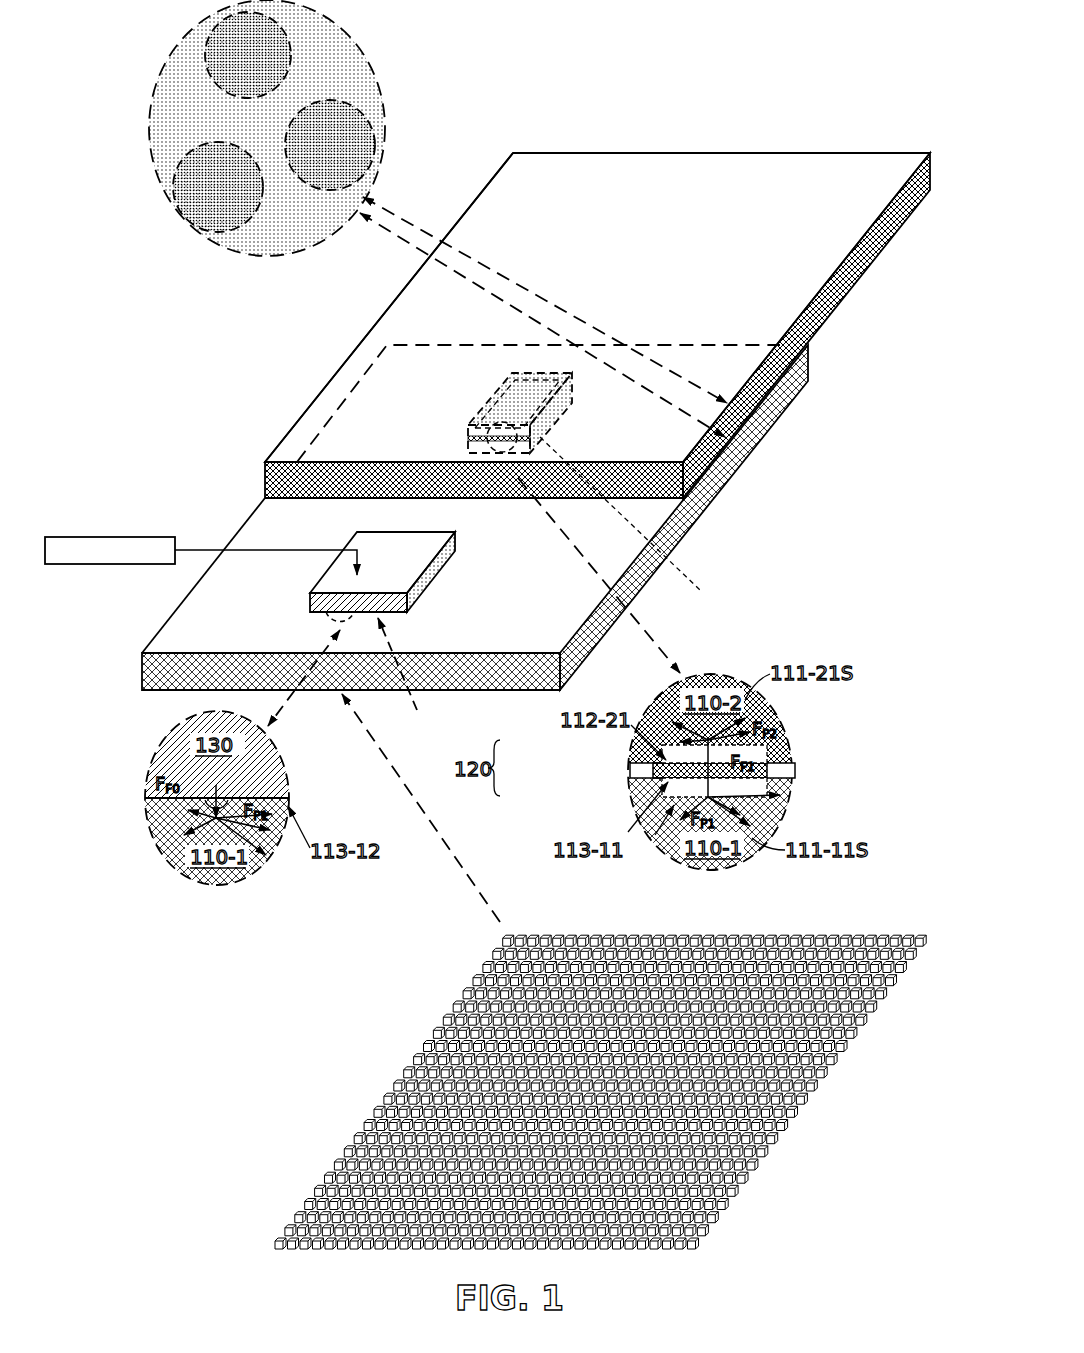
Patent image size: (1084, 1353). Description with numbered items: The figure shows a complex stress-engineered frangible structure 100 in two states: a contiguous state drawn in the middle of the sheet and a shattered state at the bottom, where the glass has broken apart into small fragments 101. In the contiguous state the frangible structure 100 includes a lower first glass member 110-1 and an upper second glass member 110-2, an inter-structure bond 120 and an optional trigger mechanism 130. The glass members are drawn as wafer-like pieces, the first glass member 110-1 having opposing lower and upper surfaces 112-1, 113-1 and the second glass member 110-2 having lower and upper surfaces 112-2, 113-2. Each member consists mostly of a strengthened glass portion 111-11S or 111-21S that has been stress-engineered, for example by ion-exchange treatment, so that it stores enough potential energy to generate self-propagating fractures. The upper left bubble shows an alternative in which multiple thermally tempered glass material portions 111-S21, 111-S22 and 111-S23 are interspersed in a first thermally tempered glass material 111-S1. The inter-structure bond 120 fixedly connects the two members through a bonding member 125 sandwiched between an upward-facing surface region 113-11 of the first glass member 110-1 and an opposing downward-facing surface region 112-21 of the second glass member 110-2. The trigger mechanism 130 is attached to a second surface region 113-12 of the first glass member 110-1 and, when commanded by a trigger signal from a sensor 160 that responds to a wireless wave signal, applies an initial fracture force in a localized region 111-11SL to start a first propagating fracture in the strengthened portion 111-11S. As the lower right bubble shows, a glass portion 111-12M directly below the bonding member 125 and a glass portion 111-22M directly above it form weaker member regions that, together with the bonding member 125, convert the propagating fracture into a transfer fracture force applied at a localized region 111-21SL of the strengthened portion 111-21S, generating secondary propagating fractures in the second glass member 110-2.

The complex stress-engineered frangible structure 100 is at (505, 540).
The display pixels array 101 is at (433, 1032).
The first glass member 110-1 is at (140, 673).
The second glass member 110-2 is at (263, 481).
The strengthened glass portion of first glass member 111-11S is at (745, 445).
The strengthened glass portion of second glass member 111-21S is at (743, 418).
The localized region of strengthened portion of first glass member 111-11SL is at (166, 807).
The localized region of strengthened portion of second glass member 111-21SL is at (670, 733).
The glass portion of second glass member 111-22M is at (660, 755).
The glass portion of first glass member 111-12M is at (665, 788).
The first thermally tempered glass material 111-S1 is at (243, 139).
The thermally tempered glass material portion 111-S21 is at (291, 63).
The thermally tempered glass material portion 111-S22 is at (375, 153).
The thermally tempered glass material portion 111-S23 is at (264, 195).
The lower surface of first glass member 112-1 is at (163, 692).
The lower surface of second glass member 112-2 is at (288, 500).
The downward-facing surface region 112-21 is at (483, 413).
The upper surface of first glass member 113-1 is at (140, 652).
The upper surface of second glass member 113-2 is at (263, 462).
The upward-facing surface region 113-11 is at (643, 526).
The second surface region 113-12 is at (419, 679).
The inter-structure bond 120 is at (465, 412).
The bonding member 125 is at (630, 770).
The trigger mechanism 130 is at (308, 597).
The sensor 160 is at (122, 534).